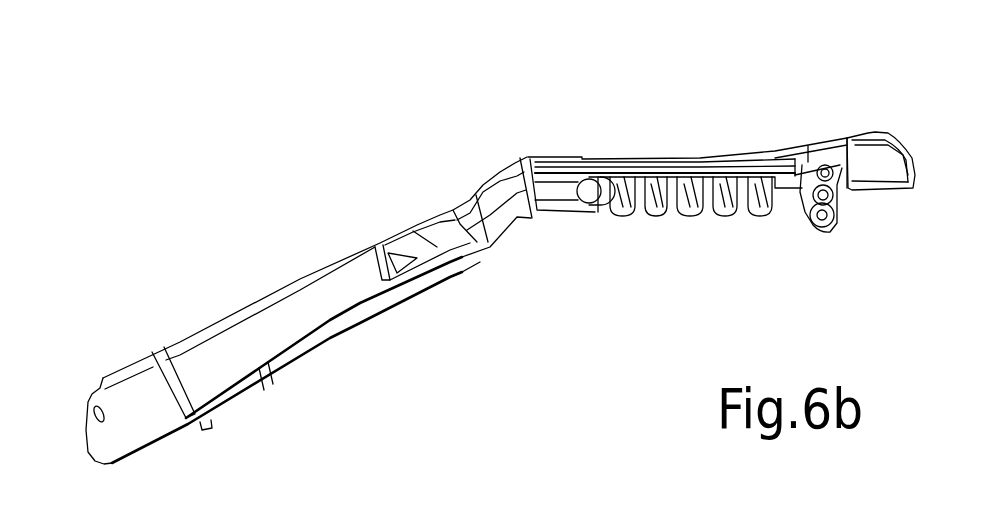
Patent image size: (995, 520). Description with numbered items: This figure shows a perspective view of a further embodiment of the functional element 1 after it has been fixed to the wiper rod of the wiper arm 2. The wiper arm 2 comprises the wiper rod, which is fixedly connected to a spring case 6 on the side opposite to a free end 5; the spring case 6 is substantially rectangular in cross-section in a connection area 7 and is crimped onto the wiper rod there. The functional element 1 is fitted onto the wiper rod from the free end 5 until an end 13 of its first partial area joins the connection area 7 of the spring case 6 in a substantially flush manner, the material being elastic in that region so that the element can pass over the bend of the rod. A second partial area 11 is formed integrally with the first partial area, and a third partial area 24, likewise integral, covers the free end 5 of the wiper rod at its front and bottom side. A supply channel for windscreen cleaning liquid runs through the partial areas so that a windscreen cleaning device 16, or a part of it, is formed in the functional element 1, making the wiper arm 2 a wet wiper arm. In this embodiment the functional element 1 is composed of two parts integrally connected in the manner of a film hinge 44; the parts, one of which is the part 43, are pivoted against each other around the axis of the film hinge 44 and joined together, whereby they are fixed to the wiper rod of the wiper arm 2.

The functional element 1 is at (811, 82).
The wiper arm 2 is at (265, 226).
The free end 5 is at (862, 192).
The spring case 6 is at (288, 337).
The connection area 7 is at (440, 257).
The second partial area 11 is at (669, 115).
The end 13 is at (408, 228).
The windscreen cleaning device 16 is at (748, 240).
The third partial area 24 is at (896, 110).
The part 43 is at (703, 210).
The film hinge 44 is at (605, 206).